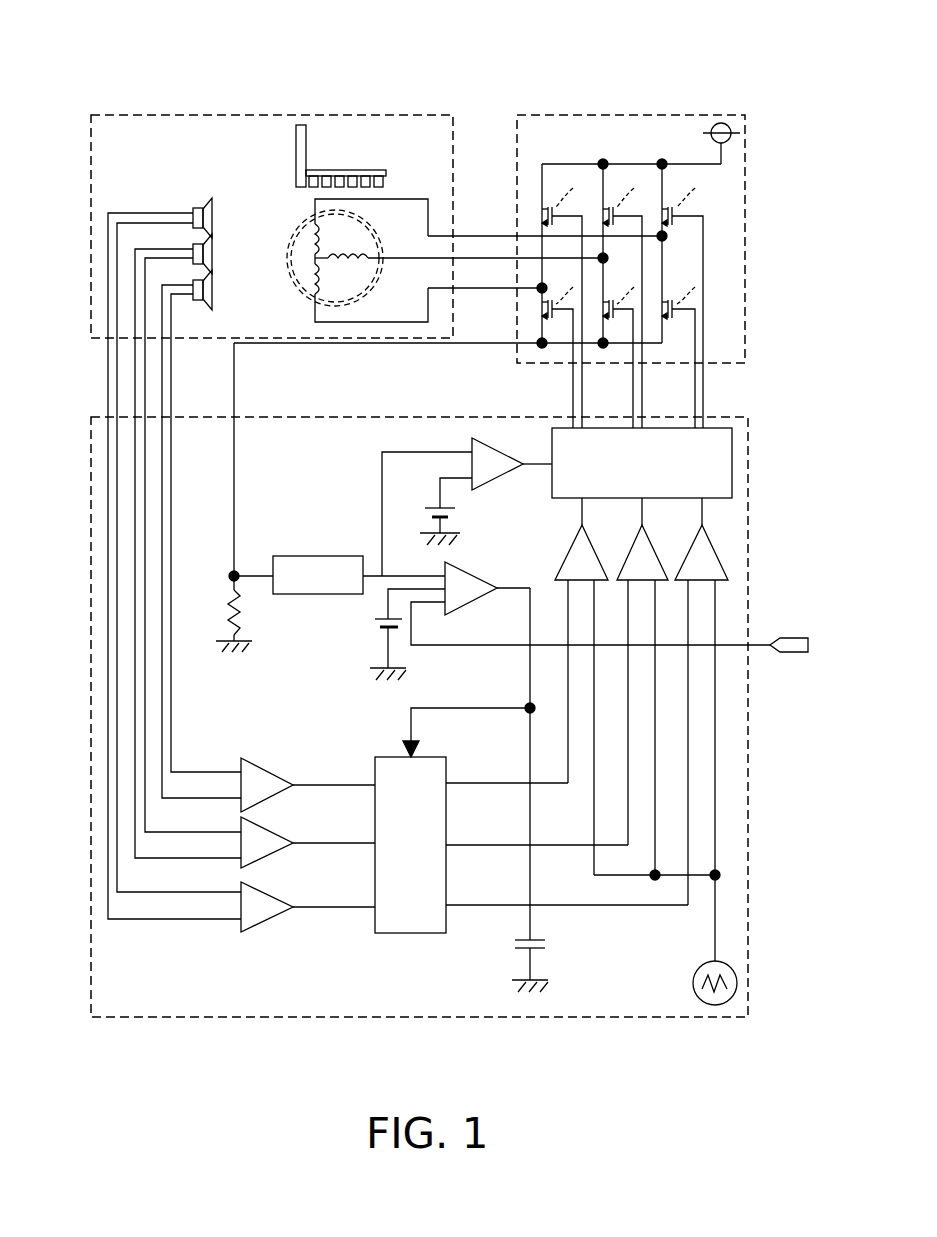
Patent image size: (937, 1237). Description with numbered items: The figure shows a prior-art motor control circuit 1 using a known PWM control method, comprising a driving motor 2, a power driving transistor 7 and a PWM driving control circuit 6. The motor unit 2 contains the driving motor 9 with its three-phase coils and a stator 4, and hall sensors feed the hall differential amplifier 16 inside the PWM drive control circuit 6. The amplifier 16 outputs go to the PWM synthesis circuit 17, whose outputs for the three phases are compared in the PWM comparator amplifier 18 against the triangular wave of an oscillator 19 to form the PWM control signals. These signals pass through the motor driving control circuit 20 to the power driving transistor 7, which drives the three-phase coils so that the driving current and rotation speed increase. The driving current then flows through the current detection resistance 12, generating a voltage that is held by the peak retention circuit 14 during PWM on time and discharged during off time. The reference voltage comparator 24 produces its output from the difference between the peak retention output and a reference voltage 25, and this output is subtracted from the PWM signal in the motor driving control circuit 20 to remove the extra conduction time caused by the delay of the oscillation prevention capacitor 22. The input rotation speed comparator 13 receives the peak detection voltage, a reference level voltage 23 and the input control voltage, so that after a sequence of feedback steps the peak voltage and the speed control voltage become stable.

The motor driving device 1 is at (70, 41).
The driving motor 2 is at (91, 168).
The stator 4 is at (384, 174).
The PWM driving control circuit 6 is at (470, 440).
The power driving transistor 7 is at (748, 245).
The motor 9 is at (292, 230).
The current detection resistance 12 is at (222, 606).
The input rotation speed comparator 13 is at (483, 576).
The peak retention circuit 14 is at (325, 557).
The hall differential amplifier 16 is at (278, 888).
The PWM synthesis circuit 17 is at (378, 906).
The PWM comparator amplifier 18 is at (596, 584).
The triangular wave oscillator 19 is at (694, 985).
The motor driving control circuit 20 is at (548, 440).
The oscillation prevention capacitor 22 is at (515, 941).
The reference voltage source 23 is at (384, 656).
The reference voltage comparator 24 is at (470, 468).
The reference voltage source 25 is at (436, 522).